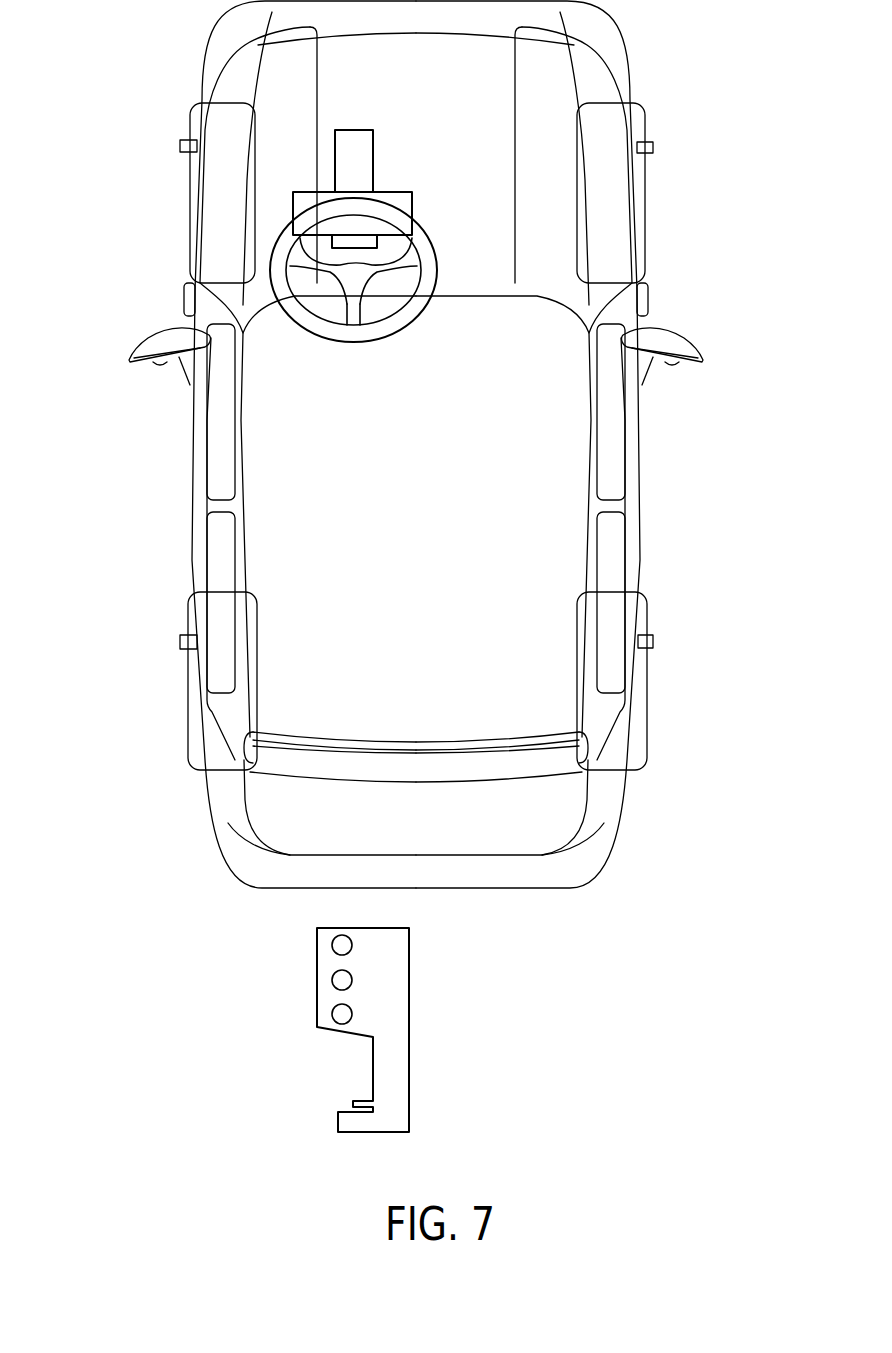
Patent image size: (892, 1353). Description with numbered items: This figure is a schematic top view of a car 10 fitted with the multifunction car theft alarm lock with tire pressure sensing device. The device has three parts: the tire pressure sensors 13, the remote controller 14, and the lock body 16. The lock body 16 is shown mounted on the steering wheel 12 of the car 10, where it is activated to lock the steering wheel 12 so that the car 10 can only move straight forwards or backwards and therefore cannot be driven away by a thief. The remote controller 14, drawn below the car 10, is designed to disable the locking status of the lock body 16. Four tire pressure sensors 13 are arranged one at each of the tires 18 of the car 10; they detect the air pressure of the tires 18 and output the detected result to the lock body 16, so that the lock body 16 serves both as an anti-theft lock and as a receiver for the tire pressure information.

The car 10 is at (592, 90).
The steering wheel 12 is at (303, 253).
The tire pressure sensors 13 is at (180, 146).
The remote controller 14 is at (403, 970).
The lock body 16 is at (298, 198).
The tires 18 is at (195, 112).